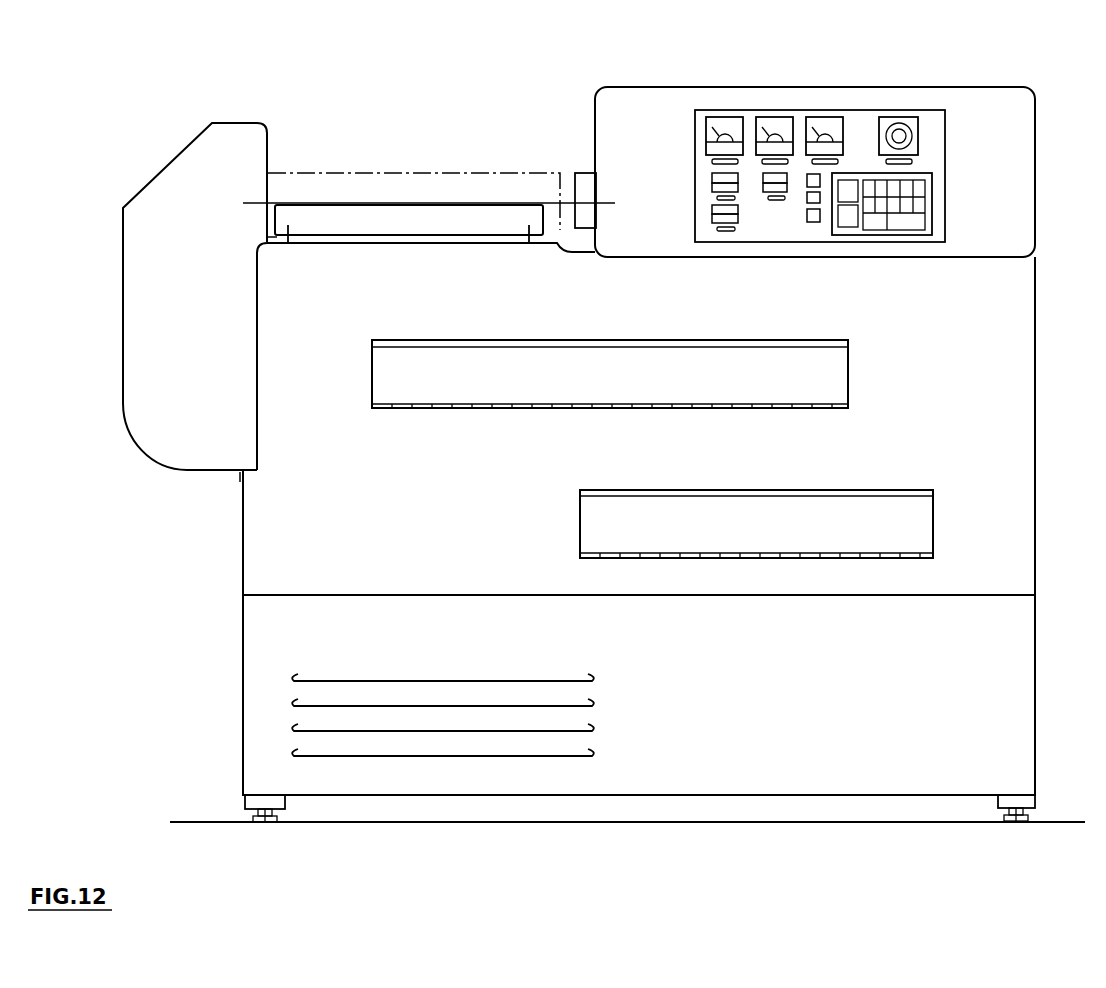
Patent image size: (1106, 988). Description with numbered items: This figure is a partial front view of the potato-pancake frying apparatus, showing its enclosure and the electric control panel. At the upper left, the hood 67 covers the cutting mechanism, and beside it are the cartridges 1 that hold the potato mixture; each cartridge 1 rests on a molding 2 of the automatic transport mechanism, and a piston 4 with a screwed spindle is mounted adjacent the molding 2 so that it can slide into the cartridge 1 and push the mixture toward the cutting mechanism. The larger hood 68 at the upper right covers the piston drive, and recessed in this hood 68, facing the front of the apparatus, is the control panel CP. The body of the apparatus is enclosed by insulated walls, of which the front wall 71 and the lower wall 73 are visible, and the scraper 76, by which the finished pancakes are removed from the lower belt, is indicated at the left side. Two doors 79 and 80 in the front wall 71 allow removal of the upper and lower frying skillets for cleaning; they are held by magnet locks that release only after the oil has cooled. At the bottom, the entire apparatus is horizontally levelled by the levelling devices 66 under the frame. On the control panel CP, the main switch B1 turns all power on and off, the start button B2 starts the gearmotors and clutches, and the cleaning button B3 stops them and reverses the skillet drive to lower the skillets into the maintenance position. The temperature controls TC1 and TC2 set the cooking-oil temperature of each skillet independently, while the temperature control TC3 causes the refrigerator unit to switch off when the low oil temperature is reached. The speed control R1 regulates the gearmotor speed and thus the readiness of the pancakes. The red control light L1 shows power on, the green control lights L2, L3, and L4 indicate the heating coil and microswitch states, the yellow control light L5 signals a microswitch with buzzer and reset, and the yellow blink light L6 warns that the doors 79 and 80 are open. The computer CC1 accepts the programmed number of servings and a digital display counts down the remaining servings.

The cartridge 1 is at (441, 173).
The molding 2 is at (495, 205).
The piston 4 is at (578, 173).
The levelling device 66 is at (253, 818).
The hood 67 is at (187, 470).
The hood 68 is at (1037, 178).
The front wall 71 is at (262, 500).
The insulated wall 73 is at (257, 715).
The scraper 76 is at (245, 558).
The door 79 is at (934, 541).
The door 80 is at (849, 395).
The control panel CP is at (945, 178).
The temperature control TC1 is at (719, 117).
The temperature control TC2 is at (767, 117).
The temperature control TC3 is at (818, 117).
The speed control R1 is at (898, 117).
The red control light L1 is at (712, 175).
The green control light L2 is at (712, 210).
The green control light L3 is at (813, 224).
The green control light L4 is at (806, 204).
The yellow control light L5 is at (805, 188).
The yellow blink light L6 is at (763, 176).
The main switch B1 is at (712, 186).
The start button B2 is at (712, 222).
The cleaning button B3 is at (763, 190).
The computer CC1 is at (905, 235).